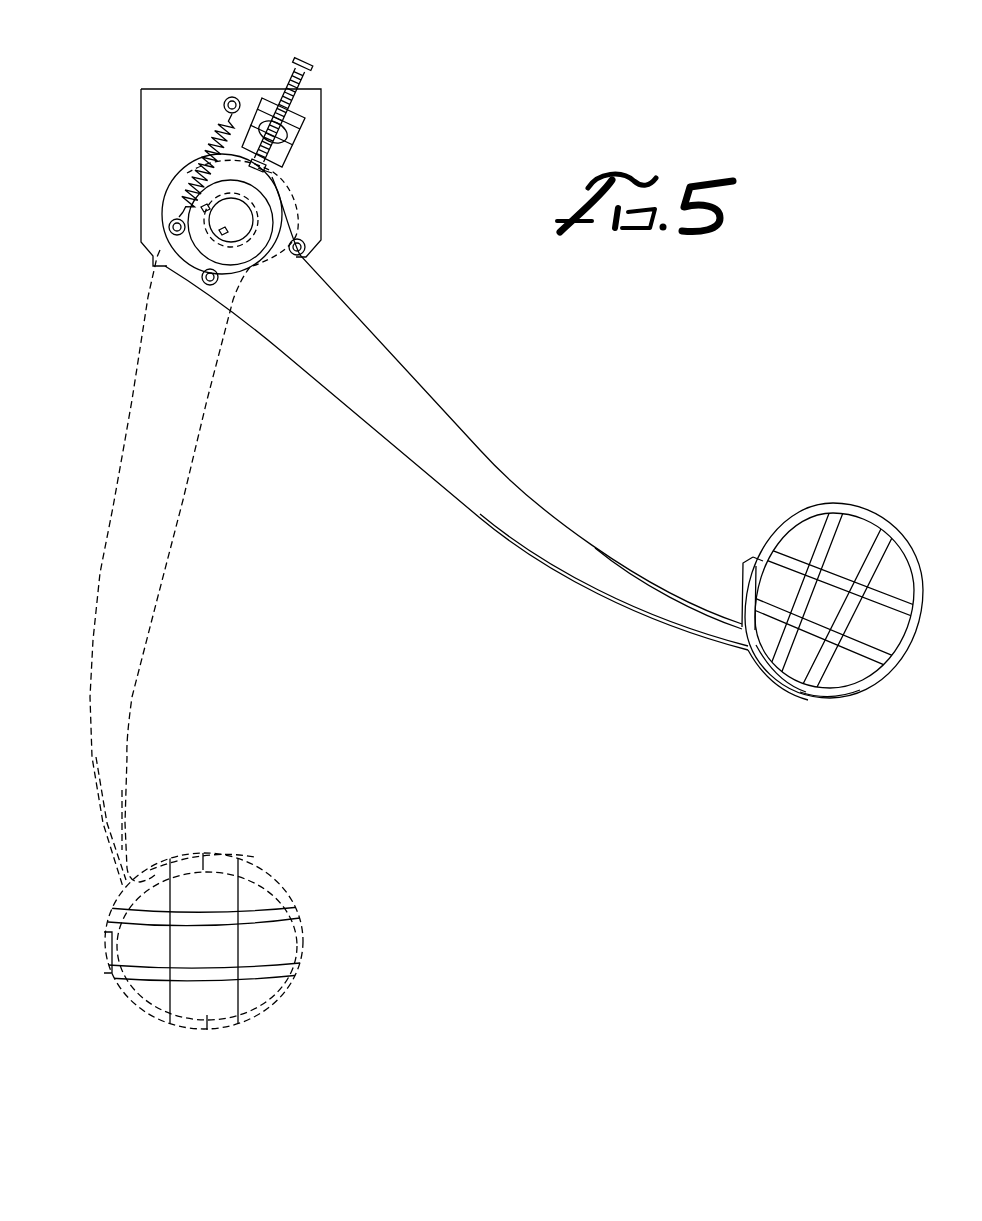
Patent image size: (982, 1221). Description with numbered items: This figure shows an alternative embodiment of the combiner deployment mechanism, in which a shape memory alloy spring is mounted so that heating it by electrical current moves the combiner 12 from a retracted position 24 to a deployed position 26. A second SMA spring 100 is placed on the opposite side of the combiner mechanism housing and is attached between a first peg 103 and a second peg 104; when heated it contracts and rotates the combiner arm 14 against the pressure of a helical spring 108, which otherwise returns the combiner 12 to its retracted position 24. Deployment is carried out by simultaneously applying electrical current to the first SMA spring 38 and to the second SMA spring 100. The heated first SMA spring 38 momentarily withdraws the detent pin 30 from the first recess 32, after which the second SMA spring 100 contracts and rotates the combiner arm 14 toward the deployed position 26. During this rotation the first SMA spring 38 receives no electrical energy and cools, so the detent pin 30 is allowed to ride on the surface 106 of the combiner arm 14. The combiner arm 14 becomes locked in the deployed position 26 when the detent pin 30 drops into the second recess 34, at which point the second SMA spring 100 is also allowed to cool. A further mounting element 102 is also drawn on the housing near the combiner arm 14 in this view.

The combiner 12 is at (838, 499).
The combiner arm 14 is at (560, 520).
The retracted position 24 is at (863, 698).
The deployed position 26 is at (236, 854).
The detent pin 30 is at (310, 53).
The first recess 32 is at (264, 178).
The second recess 34 is at (187, 173).
The first SMA spring 38 is at (287, 78).
The second SMA spring 100 is at (208, 131).
The mounting screw 102 is at (198, 278).
The first peg 103 is at (170, 227).
The second peg 104 is at (223, 100).
The surface 106 is at (186, 174).
The helical spring 108 is at (245, 247).